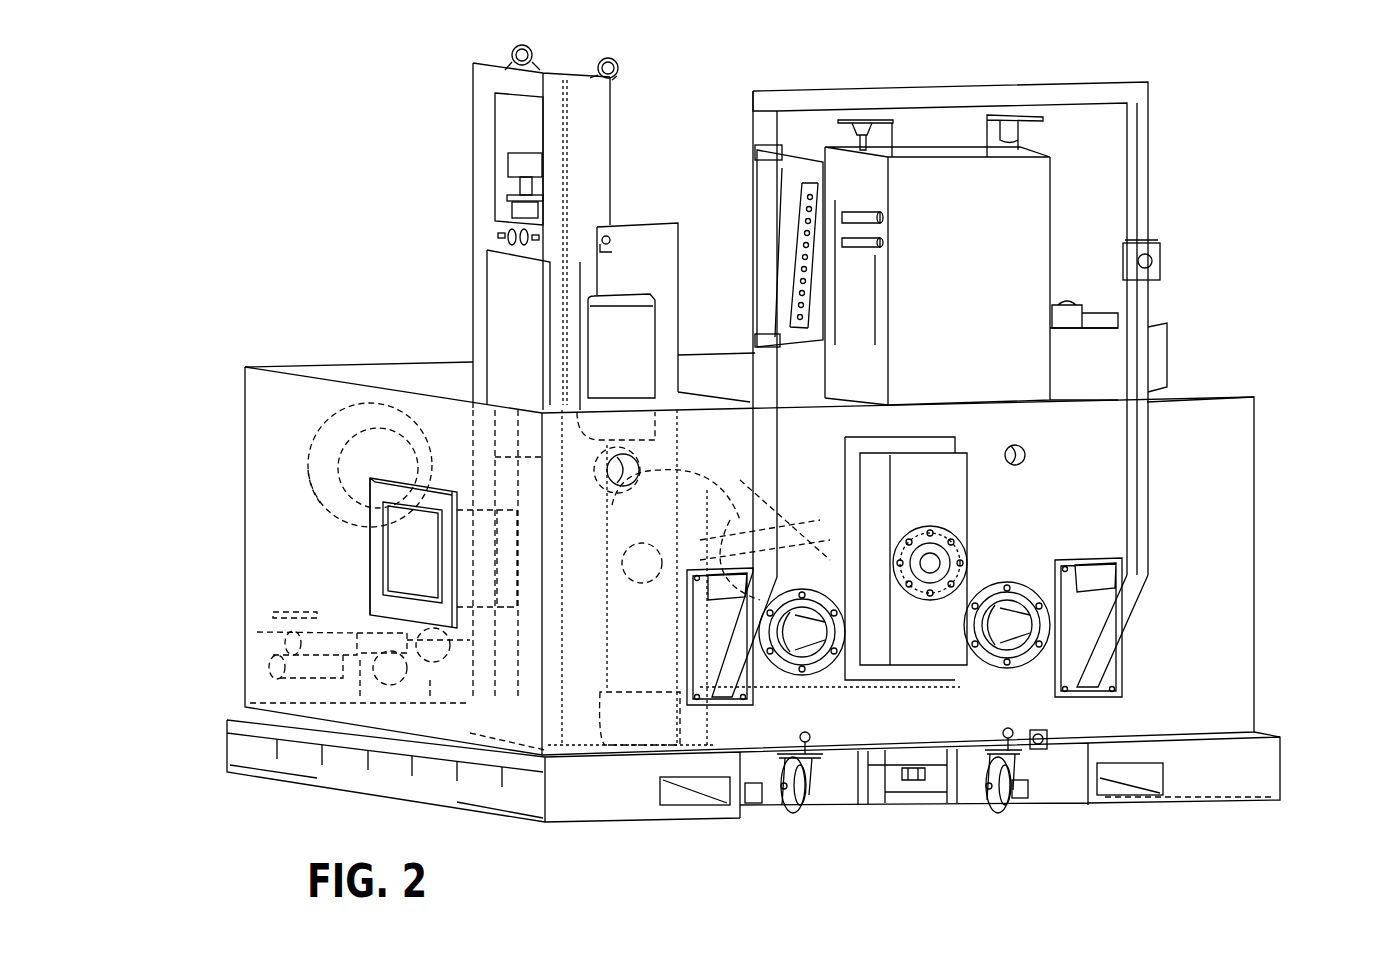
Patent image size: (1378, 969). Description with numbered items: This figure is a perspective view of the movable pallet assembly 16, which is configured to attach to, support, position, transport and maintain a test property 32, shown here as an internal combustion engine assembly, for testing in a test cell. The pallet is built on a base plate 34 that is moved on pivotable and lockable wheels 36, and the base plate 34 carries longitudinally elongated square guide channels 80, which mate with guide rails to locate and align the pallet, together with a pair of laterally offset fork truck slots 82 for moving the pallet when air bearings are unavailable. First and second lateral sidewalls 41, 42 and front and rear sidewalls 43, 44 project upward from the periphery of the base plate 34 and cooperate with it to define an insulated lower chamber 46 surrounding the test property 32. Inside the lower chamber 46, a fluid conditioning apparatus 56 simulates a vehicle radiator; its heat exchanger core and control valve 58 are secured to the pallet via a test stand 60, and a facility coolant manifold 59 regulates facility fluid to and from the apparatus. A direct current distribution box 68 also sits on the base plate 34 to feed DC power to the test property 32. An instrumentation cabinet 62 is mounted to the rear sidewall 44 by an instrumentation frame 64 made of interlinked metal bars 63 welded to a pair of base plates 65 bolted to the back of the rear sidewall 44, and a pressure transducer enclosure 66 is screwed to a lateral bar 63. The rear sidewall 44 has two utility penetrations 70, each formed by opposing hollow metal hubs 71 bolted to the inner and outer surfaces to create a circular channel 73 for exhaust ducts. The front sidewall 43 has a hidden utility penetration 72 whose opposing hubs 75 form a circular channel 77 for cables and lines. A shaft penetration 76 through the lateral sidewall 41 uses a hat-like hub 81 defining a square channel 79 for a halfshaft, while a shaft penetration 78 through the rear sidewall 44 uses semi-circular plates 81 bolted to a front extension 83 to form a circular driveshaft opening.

The movable pallet assembly 16 is at (262, 176).
The test property 32 is at (616, 530).
The base plate 34 is at (233, 740).
The wheels 36 is at (797, 812).
The first lateral sidewall 41 is at (253, 585).
The second lateral sidewall 42 is at (1255, 440).
The front sidewall 43 is at (413, 352).
The rear sidewall 44 is at (1198, 420).
The lower chamber 46 is at (445, 380).
The fluid conditioning apparatus 56 is at (634, 176).
The heat exchanger core and control valve 58 is at (680, 262).
The facility coolant manifold 59 is at (287, 667).
The test stand 60 is at (472, 98).
The instrumentation cabinet 62 is at (1052, 221).
The metal bars 63 is at (1045, 92).
The instrumentation frame 64 is at (1122, 80).
The base plates 65 is at (705, 613).
The pressure transducer enclosure 66 is at (772, 182).
The direct current distribution box 68 is at (1102, 320).
The utility penetrations 70 is at (821, 686).
The hollow metal hubs 71 is at (805, 595).
The utility penetration 72 is at (330, 453).
The circular channel 73 is at (807, 647).
The hubs 75 is at (300, 475).
The shaft penetration 76 is at (358, 548).
The circular channel 77 is at (385, 445).
The shaft penetration 78 is at (937, 530).
The square channel 79 is at (423, 593).
The guide channels 80 is at (750, 806).
The hub / semi-circular plates 81 is at (428, 502).
The fork truck slots 82 is at (685, 798).
The front extension 83 is at (972, 475).